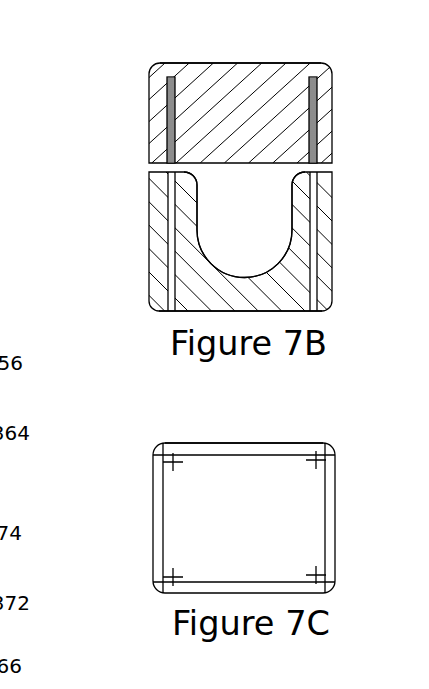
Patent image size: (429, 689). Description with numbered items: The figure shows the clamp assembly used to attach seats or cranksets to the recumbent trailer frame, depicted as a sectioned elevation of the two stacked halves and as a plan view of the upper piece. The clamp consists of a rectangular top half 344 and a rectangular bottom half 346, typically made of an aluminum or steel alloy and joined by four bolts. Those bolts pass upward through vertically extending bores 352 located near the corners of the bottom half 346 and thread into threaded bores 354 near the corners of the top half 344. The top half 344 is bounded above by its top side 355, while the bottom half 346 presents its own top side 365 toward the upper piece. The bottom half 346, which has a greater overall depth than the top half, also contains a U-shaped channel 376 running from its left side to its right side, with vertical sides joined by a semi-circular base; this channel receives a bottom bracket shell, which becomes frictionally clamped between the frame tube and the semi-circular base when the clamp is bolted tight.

In FIG. 7B, the top half 344 is at (273, 77).
In FIG. 7C, the top half 344 is at (328, 517).
In FIG. 7B, the bottom half 346 is at (325, 270).
In FIG. 7B, the top side 355 is at (205, 63).
In FIG. 7C, the top side 355 is at (280, 476).
In FIG. 7B, the threaded bores 354 is at (171, 112).
In FIG. 7B, the vertically extending bores 352 is at (168, 227).
In FIG. 7B, the U-shaped channel 376 is at (273, 205).
In FIG. 7B, the top side 365 is at (195, 311).